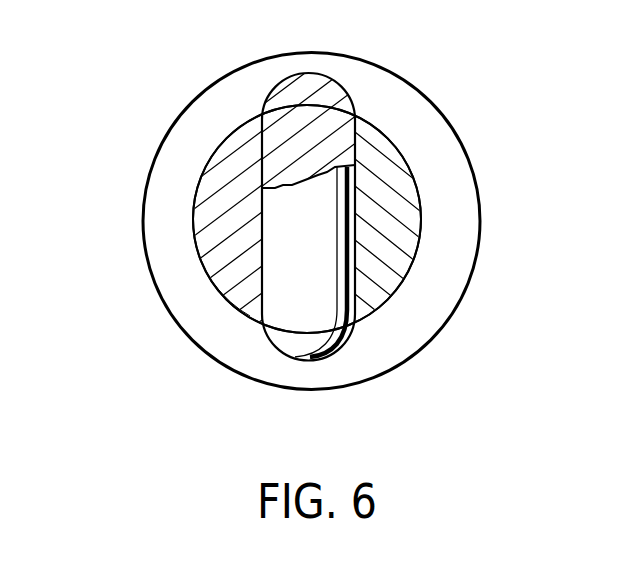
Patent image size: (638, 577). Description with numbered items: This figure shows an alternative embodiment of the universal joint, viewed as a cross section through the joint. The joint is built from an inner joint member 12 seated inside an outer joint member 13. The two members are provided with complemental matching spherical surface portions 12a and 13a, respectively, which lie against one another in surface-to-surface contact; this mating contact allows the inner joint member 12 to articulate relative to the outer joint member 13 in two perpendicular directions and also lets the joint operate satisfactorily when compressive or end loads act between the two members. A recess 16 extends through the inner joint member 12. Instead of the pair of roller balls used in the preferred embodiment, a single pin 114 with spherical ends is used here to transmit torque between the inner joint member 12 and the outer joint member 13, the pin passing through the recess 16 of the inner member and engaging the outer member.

The inner joint member 12 is at (400, 163).
The spherical surface portion 12a is at (193, 230).
The outer joint member 13 is at (463, 167).
The spherical surface portion 13a is at (420, 240).
The recess 16 is at (350, 257).
The pin 114 is at (280, 90).